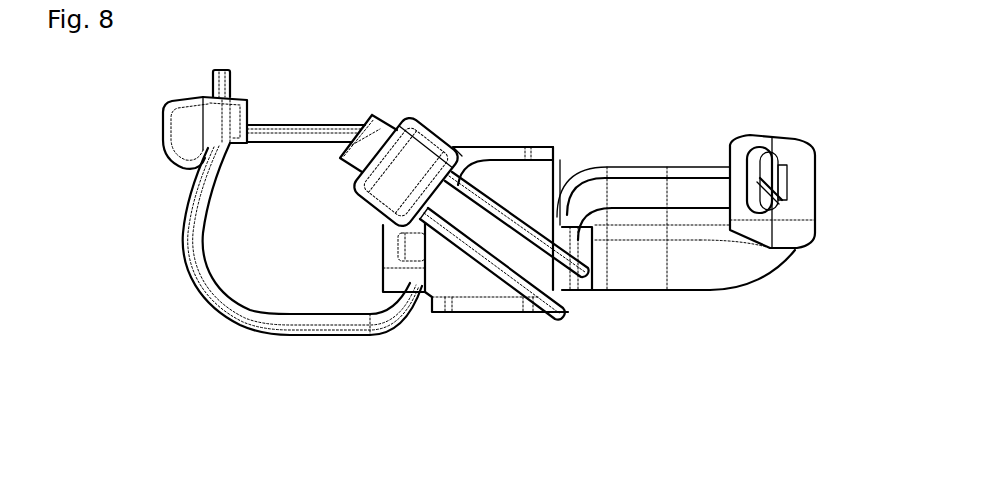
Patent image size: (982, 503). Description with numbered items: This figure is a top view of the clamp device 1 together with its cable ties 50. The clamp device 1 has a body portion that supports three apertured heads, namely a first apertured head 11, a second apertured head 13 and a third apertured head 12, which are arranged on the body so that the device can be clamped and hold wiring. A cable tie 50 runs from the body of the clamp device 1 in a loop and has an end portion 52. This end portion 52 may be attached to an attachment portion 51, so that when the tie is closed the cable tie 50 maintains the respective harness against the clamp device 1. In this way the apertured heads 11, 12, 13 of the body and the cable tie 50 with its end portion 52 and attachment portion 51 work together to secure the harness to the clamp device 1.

The clamp device 1 is at (548, 424).
The first apertured head 11 is at (420, 284).
The third apertured head 12 is at (523, 186).
The second apertured head 13 is at (588, 295).
The cable tie 50 is at (235, 312).
The attachment portion 51 is at (165, 138).
The end portion 52 is at (230, 78).